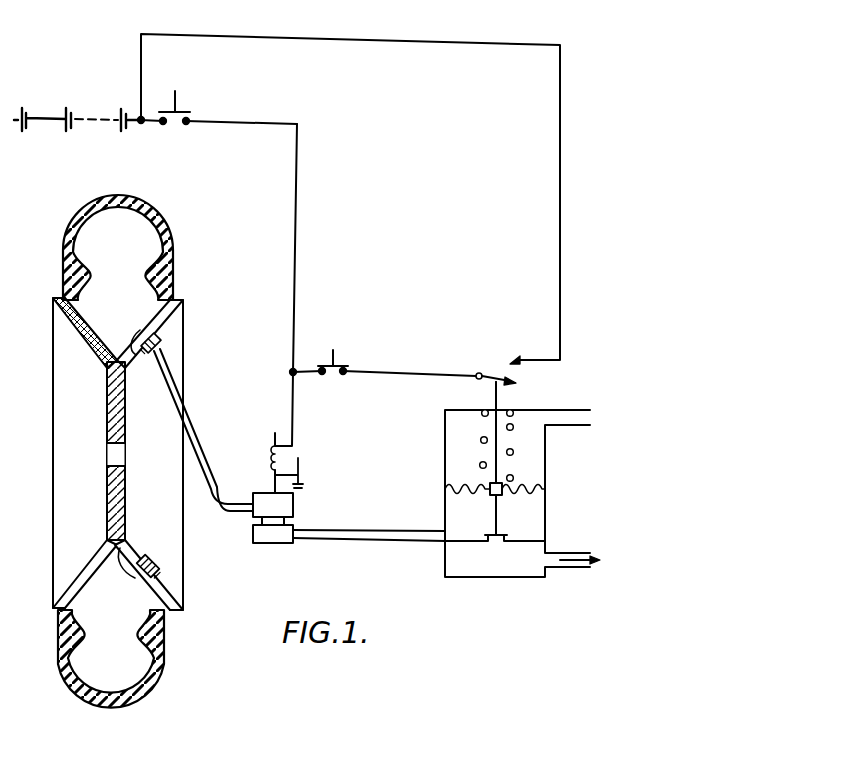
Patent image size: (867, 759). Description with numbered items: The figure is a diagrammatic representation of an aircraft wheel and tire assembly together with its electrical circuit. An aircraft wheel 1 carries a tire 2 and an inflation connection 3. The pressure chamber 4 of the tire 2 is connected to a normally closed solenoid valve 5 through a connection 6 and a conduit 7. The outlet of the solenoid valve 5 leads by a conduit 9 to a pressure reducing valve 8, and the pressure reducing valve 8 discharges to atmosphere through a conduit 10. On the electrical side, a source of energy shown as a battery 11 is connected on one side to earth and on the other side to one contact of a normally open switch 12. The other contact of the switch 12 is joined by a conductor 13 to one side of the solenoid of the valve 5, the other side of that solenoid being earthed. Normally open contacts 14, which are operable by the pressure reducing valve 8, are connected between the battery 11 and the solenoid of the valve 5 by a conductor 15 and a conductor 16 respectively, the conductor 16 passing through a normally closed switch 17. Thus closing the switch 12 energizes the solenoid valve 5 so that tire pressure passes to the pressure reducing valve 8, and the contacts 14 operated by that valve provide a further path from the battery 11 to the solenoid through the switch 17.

The aircraft wheel 1 is at (110, 406).
The tire 2 is at (160, 673).
The inflation connection 3 is at (160, 573).
The pressure chamber 4 is at (126, 272).
The solenoid valve 5 is at (280, 535).
The connection 6 is at (162, 340).
The conduit 7 is at (200, 433).
The pressure reducing valve 8 is at (492, 551).
The conduit 9 is at (352, 534).
The conduit 10 is at (561, 556).
The battery 11 is at (88, 116).
The normally open switch 12 is at (186, 105).
The conductor 13 is at (297, 213).
The normally open contacts 14 is at (518, 373).
The conductor 15 is at (558, 186).
The conductor 16 is at (399, 372).
The normally closed switch 17 is at (340, 363).